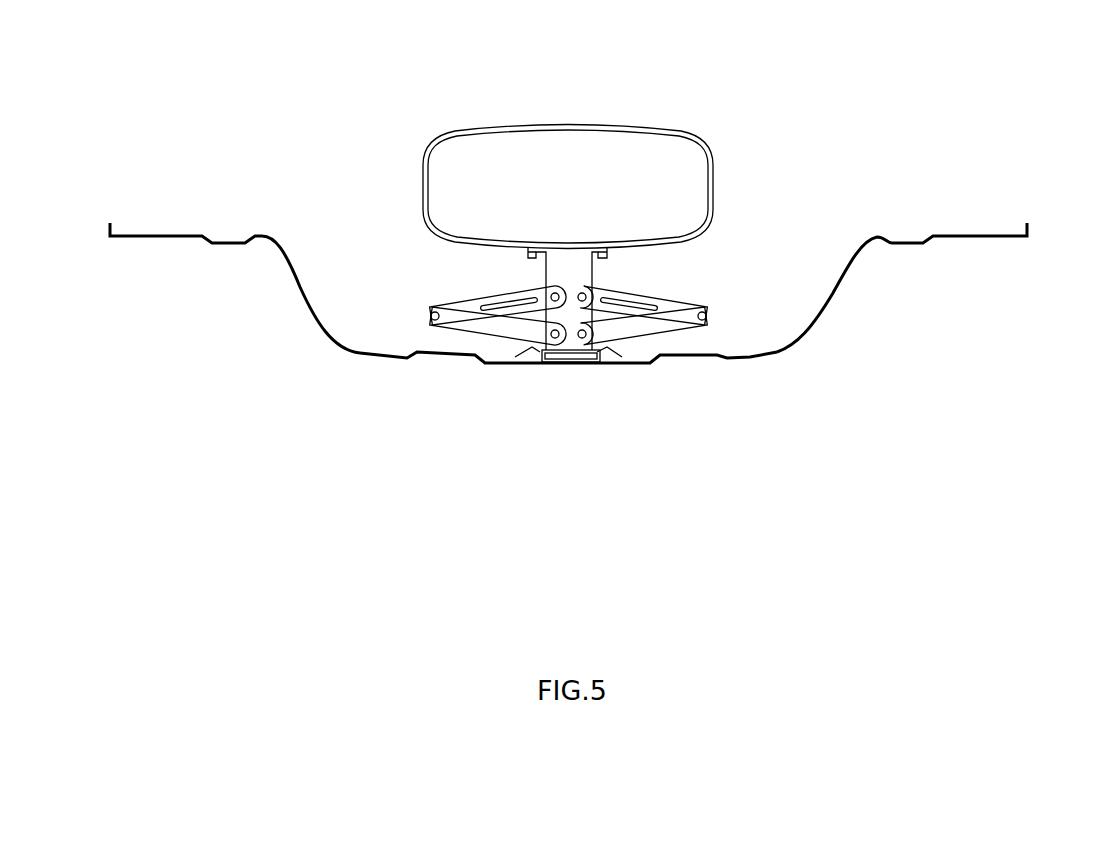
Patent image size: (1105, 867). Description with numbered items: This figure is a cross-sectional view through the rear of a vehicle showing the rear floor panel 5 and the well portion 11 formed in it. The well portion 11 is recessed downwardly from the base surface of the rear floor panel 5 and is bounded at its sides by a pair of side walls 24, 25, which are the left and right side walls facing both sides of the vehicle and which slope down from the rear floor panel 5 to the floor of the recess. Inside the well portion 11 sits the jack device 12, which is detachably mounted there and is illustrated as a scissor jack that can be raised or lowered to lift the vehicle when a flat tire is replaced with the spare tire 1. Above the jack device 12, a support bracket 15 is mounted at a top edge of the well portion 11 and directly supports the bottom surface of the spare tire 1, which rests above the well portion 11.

The spare tire 1 is at (650, 118).
The rear floor panel 5 is at (568, 293).
The well portion 11 is at (750, 319).
The jack device 12 is at (672, 295).
The support bracket 15 is at (527, 252).
The side wall 24 is at (303, 288).
The side wall 25 is at (835, 287).